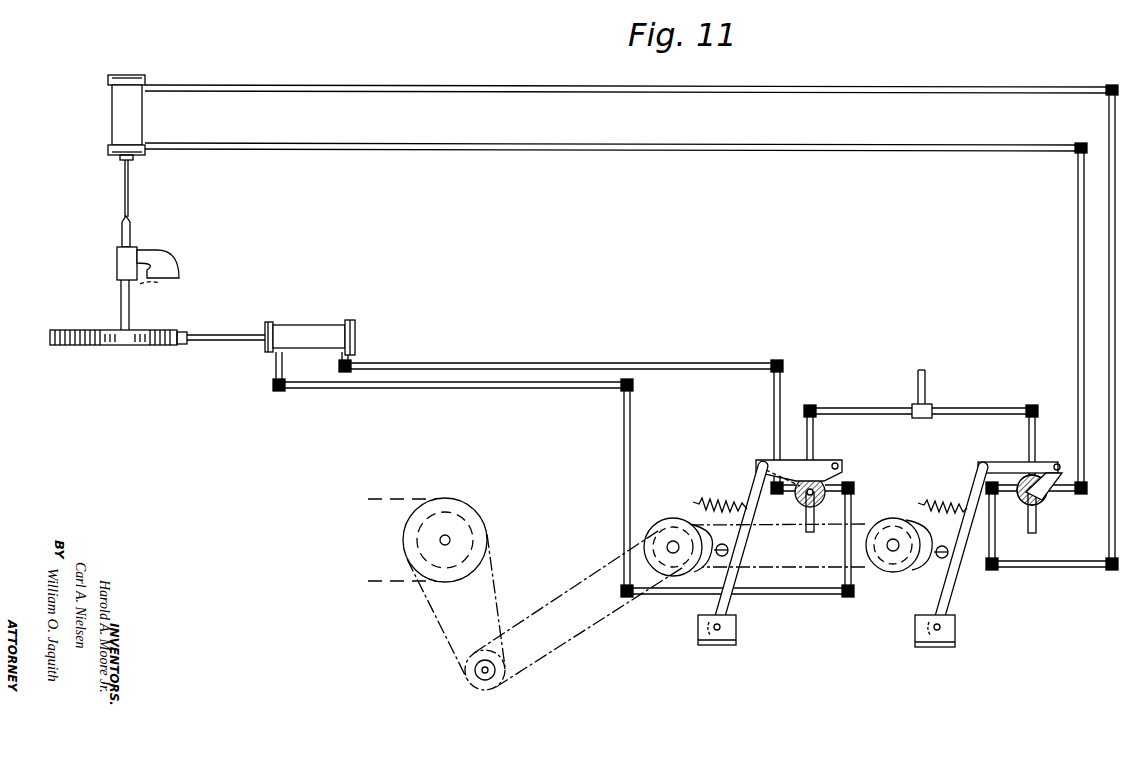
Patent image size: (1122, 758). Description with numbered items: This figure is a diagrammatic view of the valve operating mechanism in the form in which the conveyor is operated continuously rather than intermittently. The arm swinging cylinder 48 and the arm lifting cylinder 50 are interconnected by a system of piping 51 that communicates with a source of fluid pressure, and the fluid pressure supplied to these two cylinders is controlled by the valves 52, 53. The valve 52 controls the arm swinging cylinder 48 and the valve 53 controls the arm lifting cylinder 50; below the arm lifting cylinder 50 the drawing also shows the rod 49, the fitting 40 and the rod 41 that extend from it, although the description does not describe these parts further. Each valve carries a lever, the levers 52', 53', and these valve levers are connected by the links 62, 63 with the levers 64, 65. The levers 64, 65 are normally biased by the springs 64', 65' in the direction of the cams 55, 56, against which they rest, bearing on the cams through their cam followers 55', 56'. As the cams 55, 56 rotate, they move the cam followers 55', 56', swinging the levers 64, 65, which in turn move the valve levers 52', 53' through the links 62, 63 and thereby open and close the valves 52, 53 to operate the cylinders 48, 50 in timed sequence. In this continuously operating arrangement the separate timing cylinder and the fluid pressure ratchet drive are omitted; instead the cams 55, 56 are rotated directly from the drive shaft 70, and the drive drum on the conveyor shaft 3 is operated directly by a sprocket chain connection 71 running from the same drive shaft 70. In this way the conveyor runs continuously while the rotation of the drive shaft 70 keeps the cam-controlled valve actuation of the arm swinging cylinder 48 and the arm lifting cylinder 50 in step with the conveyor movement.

The conveyor shaft 3 is at (449, 537).
The valve body with elbow outlet 40 is at (178, 258).
The valve stem and rack 41 is at (130, 310).
The arm swinging cylinder 48 is at (323, 327).
The piston rod 49 is at (129, 195).
The arm lifting cylinder 50 is at (112, 117).
The system of piping 51 is at (524, 152).
The valve 52 is at (1049, 504).
The lever 52' is at (1043, 479).
The valve 53 is at (909, 451).
The lever 53' is at (832, 463).
The cam 55 is at (678, 575).
The cam follower 55' is at (688, 512).
The cam 56 is at (811, 511).
The cam follower 56' is at (935, 534).
The link 62 is at (1004, 460).
The link 63 is at (836, 460).
The lever 64 is at (965, 557).
The spring 64' is at (942, 484).
The lever 65 is at (748, 555).
The spring 65' is at (720, 479).
The drive shaft 70 is at (490, 682).
The sprocket chain connection 71 is at (495, 598).